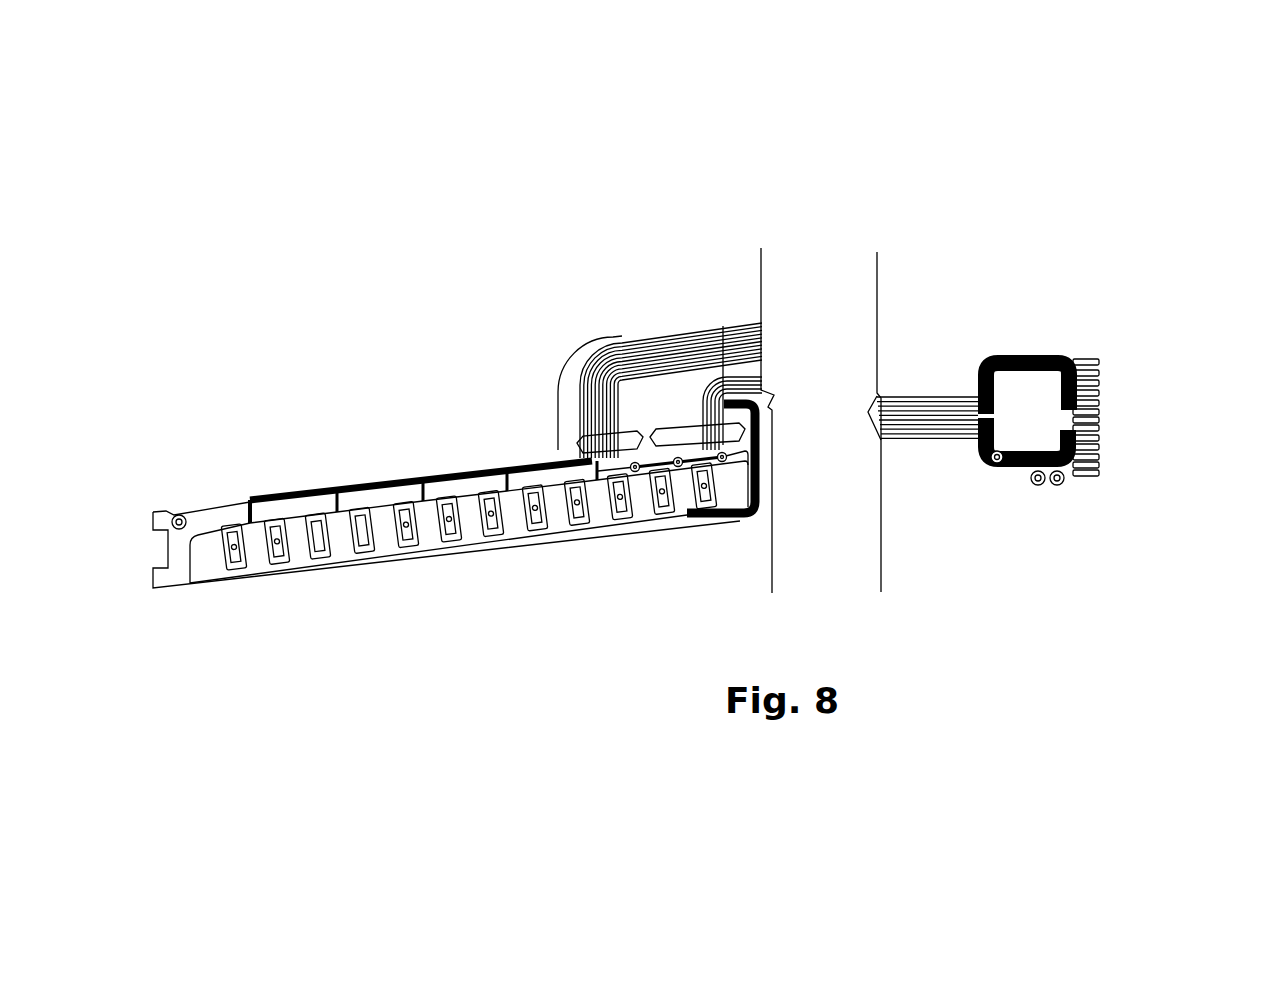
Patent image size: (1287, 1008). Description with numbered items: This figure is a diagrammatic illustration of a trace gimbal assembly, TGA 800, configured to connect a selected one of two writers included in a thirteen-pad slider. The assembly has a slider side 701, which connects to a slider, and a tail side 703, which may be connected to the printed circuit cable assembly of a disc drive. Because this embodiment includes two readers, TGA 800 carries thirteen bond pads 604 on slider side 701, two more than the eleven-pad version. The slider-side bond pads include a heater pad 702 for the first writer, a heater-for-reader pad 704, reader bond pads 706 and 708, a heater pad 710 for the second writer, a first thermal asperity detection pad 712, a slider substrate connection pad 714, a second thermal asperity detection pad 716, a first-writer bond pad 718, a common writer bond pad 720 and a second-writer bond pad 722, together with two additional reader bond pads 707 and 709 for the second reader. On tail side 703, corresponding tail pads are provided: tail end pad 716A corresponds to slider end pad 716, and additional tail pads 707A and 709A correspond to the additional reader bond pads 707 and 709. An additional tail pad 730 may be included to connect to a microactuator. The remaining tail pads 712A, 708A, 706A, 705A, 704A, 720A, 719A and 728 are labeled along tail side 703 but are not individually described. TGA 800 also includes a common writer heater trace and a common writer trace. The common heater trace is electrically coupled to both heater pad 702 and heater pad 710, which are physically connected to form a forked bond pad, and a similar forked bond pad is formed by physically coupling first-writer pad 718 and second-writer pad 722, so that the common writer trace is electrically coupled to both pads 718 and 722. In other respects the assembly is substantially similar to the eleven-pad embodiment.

The trace gimbal assembly 800 is at (1150, 166).
The bond pads 604 is at (690, 308).
The tail side 703 is at (499, 726).
The slider side 701 is at (1090, 650).
The contact pad 712A is at (237, 569).
The tail end pad 716A is at (280, 563).
The additional tail pad 707A is at (321, 558).
The additional tail pad 709A is at (365, 552).
The contact pad 708A is at (409, 546).
The contact pad 706A is at (452, 541).
The contact pad 705A is at (494, 535).
The contact pad 704A is at (538, 530).
The contact pad 720A is at (580, 524).
The contact pad 719A is at (623, 519).
The contact pad 728 is at (665, 513).
The additional tail pad 730 is at (707, 508).
The first thermal asperity detection pad 712 is at (1097, 362).
The second thermal asperity detection pad 716 is at (1097, 373).
The additional reader bond pad 707 is at (1097, 383).
The additional reader bond pad 709 is at (1097, 393).
The reader bond pad 708 is at (1097, 403).
The reader bond pad 706 is at (1097, 412).
The heater for first writer pad 702 is at (1097, 420).
The heater for second writer pad 710 is at (1097, 428).
The heater for reader pad 704 is at (1097, 438).
The slider substrate connection pad 714 is at (1097, 447).
The first writer bond pad 718 is at (1097, 457).
The second writer bond pad 722 is at (1097, 465).
The common writer bond pad 720 is at (1097, 473).